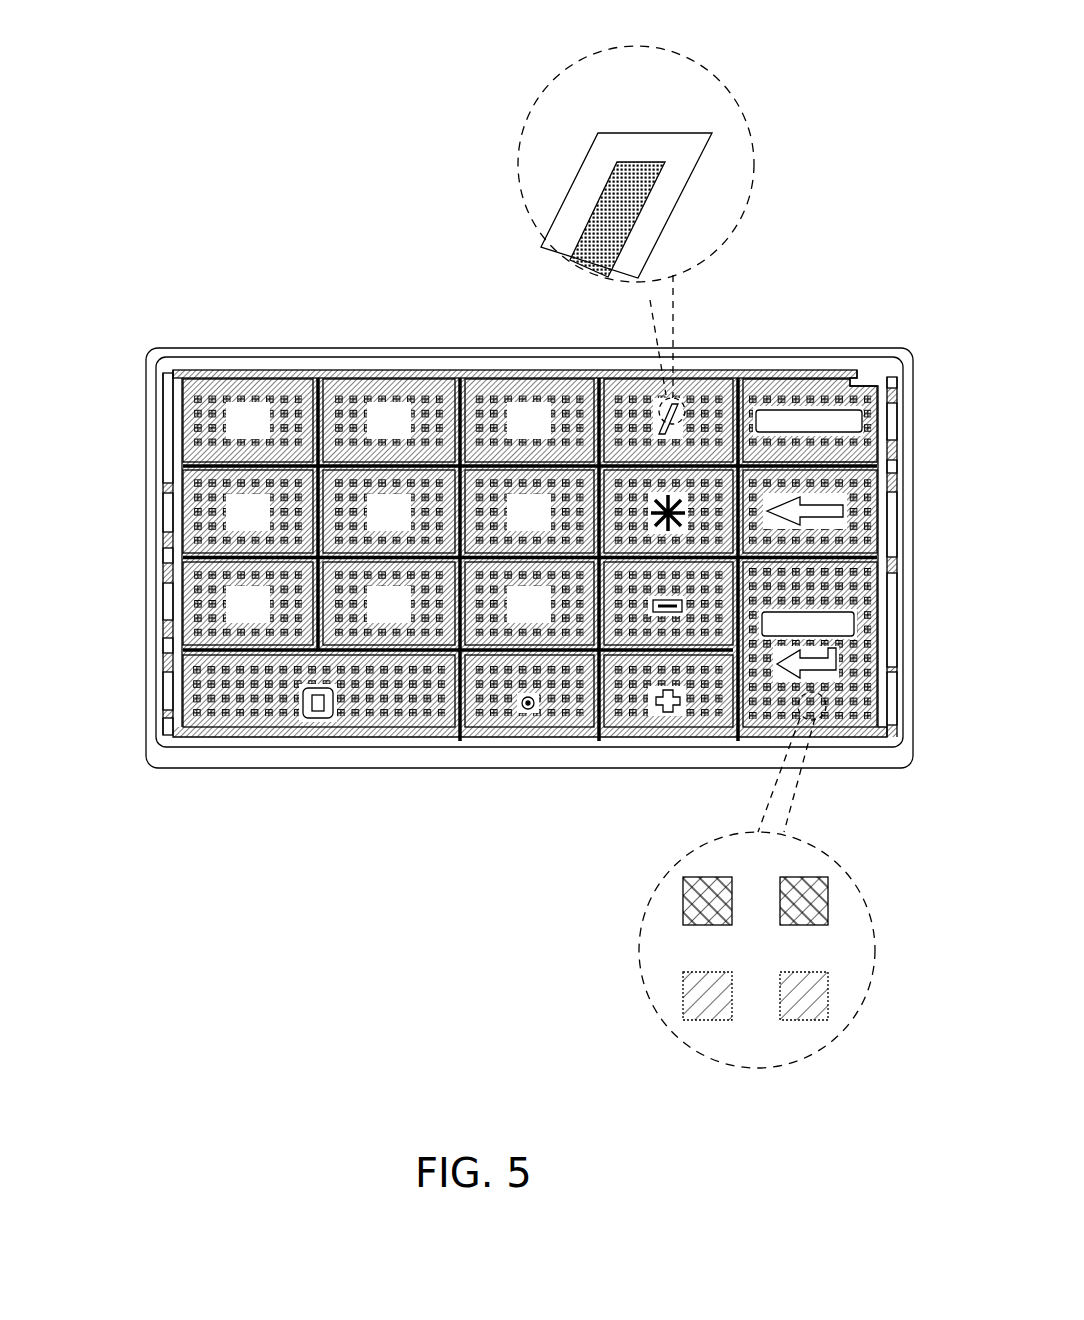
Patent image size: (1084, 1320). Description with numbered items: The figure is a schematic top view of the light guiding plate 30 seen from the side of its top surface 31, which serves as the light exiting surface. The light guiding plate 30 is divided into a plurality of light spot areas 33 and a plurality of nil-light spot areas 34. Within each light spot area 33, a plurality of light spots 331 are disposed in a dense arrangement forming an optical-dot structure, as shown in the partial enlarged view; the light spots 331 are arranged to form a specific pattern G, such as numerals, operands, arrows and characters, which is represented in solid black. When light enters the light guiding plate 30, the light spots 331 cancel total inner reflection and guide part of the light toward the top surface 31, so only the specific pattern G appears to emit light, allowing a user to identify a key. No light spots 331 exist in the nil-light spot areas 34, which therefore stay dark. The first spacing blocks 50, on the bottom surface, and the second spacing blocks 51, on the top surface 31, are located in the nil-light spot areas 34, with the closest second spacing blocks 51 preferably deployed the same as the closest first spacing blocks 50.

The light guiding plate 30 is at (166, 338).
The top surface 31 is at (181, 368).
The light spot area 33 is at (537, 557).
The light spot 331 is at (598, 252).
The nil-light spot area 34 is at (178, 472).
The first spacing block 50 is at (683, 990).
The second spacing block 51 is at (690, 897).
The specific pattern G is at (250, 390).